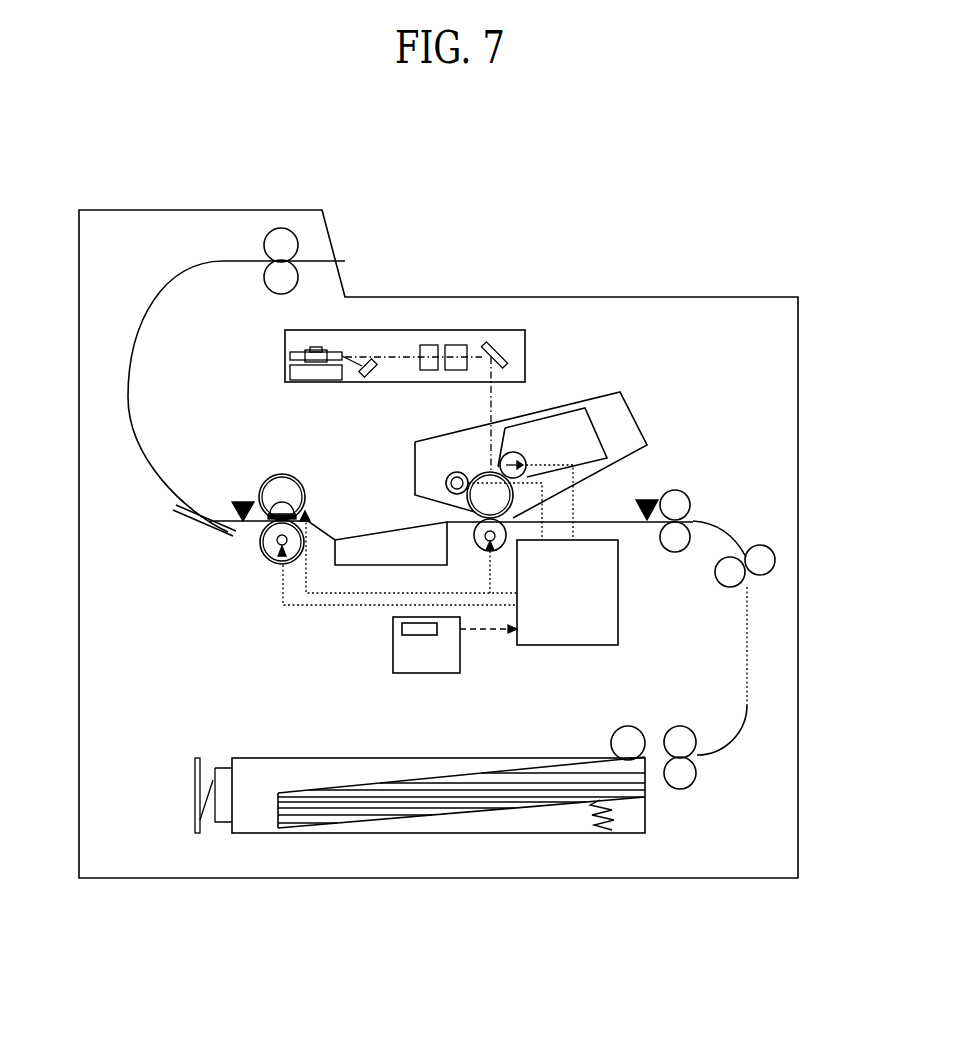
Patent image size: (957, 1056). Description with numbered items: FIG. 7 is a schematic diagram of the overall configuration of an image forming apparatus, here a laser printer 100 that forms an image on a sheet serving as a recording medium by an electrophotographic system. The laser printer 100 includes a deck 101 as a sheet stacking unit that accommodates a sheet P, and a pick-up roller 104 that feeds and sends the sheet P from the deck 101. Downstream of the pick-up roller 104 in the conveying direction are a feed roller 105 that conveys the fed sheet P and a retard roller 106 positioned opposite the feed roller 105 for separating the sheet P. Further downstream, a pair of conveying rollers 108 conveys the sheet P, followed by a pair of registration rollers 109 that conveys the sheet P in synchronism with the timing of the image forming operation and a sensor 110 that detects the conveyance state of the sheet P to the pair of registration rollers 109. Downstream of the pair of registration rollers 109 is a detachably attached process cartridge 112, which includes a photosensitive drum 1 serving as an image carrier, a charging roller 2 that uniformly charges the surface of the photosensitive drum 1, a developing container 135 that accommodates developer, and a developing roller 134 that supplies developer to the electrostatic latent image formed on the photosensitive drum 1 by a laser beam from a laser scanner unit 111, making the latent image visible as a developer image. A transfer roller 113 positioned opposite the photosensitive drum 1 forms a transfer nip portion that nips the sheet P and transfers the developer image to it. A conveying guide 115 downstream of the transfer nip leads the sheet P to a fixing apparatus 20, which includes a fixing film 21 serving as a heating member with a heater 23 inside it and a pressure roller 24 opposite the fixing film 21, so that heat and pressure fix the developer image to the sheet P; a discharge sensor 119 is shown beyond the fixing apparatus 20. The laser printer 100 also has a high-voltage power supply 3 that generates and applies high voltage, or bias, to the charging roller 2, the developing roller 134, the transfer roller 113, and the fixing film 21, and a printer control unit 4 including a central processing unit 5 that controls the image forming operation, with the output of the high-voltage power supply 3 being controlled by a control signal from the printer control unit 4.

The laser printer 100 is at (210, 210).
The laser scanner unit 111 is at (408, 330).
The process cartridge 112 is at (537, 429).
The developing roller 134 is at (490, 468).
The developing container 135 is at (607, 440).
The photosensitive drum 1 is at (482, 472).
The charging roller 2 is at (446, 483).
The fixing apparatus 20 is at (268, 488).
The fixing film 21 is at (266, 482).
The heater 23 is at (284, 513).
The pressure roller 24 is at (259, 548).
The discharge sensor 119 is at (238, 502).
The conveying guide 115 is at (357, 558).
The transfer roller 113 is at (504, 533).
The high-voltage power supply 3 is at (618, 625).
The printer control unit 4 is at (435, 678).
The central processing unit 5 is at (393, 630).
The sensor 110 is at (657, 500).
The pair of registration rollers 109 is at (702, 520).
The pair of conveying rollers 108 is at (747, 588).
The pick-up roller 104 is at (624, 728).
The feed roller 105 is at (677, 732).
The retard roller 106 is at (693, 782).
The sheet P is at (410, 820).
The deck 101 is at (530, 833).